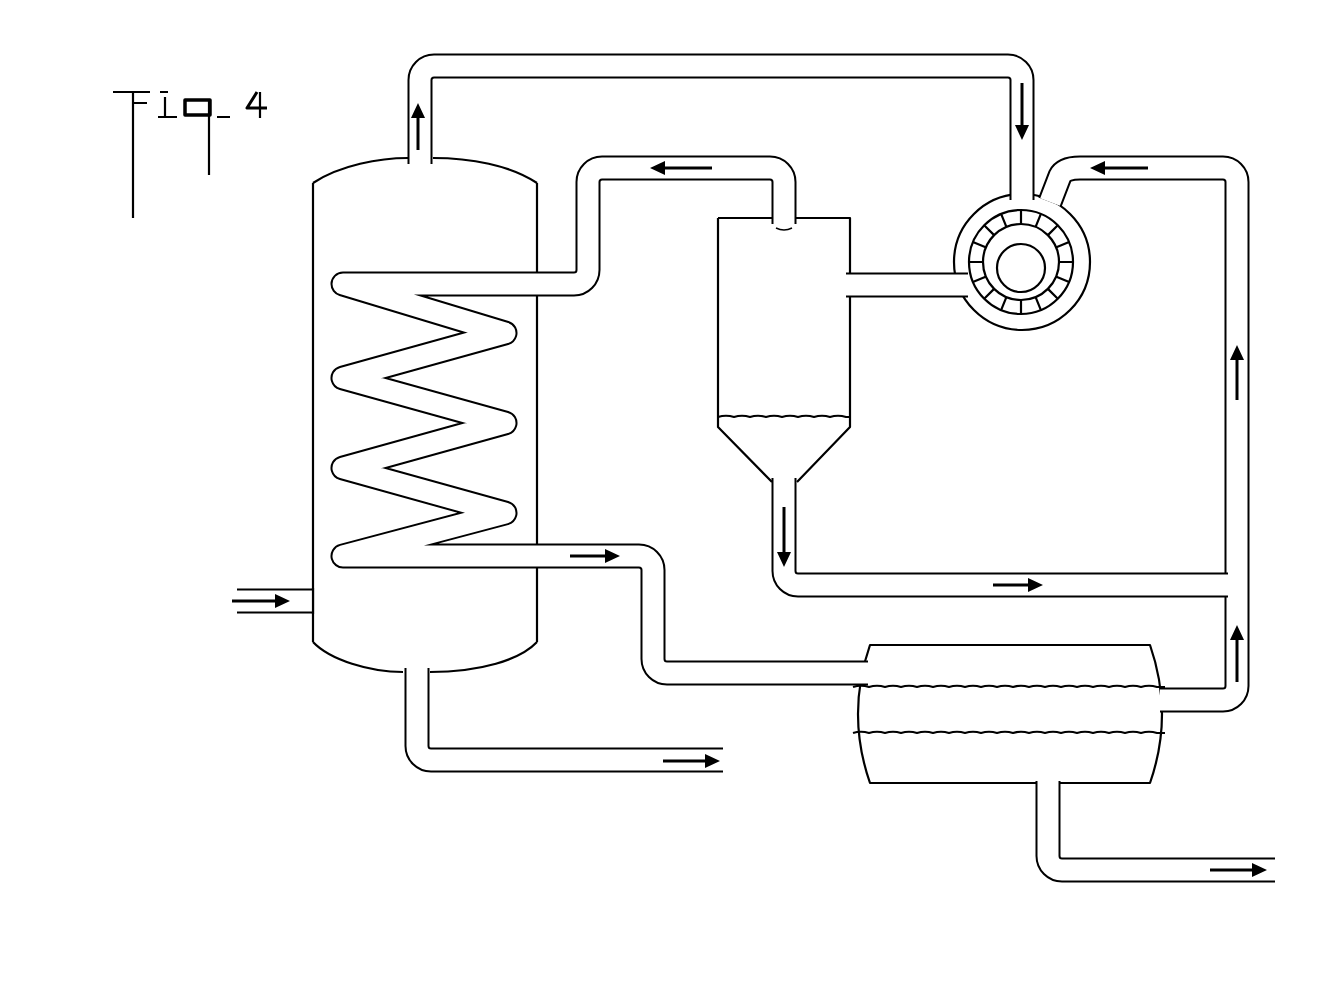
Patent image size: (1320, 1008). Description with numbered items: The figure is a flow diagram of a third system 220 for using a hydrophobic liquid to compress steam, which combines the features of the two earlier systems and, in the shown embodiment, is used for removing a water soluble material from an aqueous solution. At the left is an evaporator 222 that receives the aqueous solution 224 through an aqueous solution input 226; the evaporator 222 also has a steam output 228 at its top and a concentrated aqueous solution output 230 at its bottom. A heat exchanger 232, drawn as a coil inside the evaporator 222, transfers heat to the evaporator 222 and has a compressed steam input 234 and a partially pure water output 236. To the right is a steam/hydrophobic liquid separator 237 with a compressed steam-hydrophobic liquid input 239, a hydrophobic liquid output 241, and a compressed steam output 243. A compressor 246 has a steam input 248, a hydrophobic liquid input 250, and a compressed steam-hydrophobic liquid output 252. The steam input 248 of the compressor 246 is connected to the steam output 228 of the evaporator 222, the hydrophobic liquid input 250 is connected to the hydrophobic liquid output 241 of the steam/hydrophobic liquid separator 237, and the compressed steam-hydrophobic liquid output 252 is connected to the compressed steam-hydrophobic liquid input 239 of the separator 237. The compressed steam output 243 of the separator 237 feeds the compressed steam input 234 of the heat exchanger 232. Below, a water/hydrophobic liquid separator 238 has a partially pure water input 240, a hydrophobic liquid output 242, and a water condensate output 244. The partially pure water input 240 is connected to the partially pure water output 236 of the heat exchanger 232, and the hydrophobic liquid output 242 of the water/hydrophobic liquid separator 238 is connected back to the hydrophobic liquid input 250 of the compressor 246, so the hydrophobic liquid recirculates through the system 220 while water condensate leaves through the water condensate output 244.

The third system 220 is at (1238, 124).
The evaporator 222 is at (313, 408).
The aqueous solution 224 is at (232, 602).
The aqueous solution input 226 is at (310, 600).
The steam output 228 is at (433, 163).
The concentrated aqueous solution output 230 is at (417, 670).
The heat exchanger 232 is at (503, 433).
The compressed steam input 234 is at (535, 285).
The partially pure water output 236 is at (540, 557).
The steam/hydrophobic liquid separator 237 is at (718, 313).
The water/hydrophobic liquid separator 238 is at (862, 653).
The compressed steam-hydrophobic liquid input 239 is at (850, 283).
The partially pure water input 240 is at (857, 675).
The hydrophobic liquid output 241 is at (1002, 535).
The hydrophobic liquid output 242 is at (1163, 698).
The compressed steam output 243 is at (787, 225).
The water condensate output 244 is at (1050, 783).
The compressor 246 is at (1032, 327).
The steam input 248 is at (988, 193).
The hydrophobic liquid input 250 is at (1050, 198).
The compressed steam-hydrophobic liquid output 252 is at (950, 287).